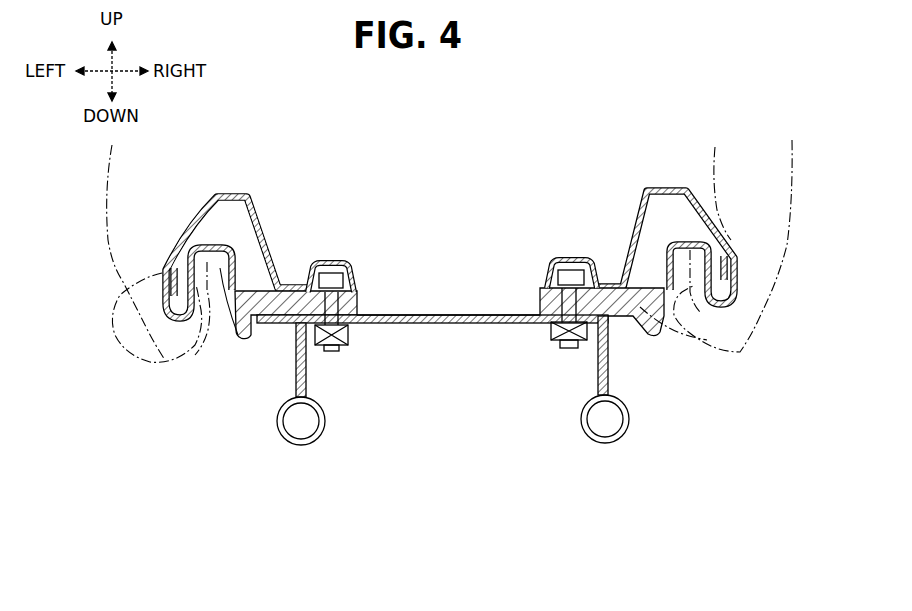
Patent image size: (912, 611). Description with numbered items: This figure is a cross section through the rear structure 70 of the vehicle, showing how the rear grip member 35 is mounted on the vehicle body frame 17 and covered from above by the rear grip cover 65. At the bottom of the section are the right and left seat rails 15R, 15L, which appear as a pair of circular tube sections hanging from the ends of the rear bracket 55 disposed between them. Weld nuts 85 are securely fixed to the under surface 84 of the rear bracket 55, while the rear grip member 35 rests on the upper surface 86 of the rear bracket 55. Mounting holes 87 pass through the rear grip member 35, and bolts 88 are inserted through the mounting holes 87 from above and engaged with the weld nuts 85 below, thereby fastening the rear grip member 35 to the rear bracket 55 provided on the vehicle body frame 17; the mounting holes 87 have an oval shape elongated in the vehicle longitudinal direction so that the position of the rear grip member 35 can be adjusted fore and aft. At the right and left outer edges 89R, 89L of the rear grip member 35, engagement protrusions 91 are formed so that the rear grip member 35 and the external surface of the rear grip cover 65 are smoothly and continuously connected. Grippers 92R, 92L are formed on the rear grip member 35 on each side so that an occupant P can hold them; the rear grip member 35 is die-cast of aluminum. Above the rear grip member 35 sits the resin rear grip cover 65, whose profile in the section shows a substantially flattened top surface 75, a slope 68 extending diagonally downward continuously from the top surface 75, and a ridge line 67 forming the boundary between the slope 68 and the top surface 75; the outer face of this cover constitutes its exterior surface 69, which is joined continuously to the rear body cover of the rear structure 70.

The rear structure 70 is at (532, 152).
The ridge line 67 is at (210, 212).
The slope 68 is at (188, 223).
The exterior surface 69 is at (226, 190).
The top surface 75 is at (245, 192).
The rear grip cover 65 is at (661, 183).
The engagement protrusions 91 is at (163, 273).
The under surface 84 is at (440, 325).
The rear grip member 35 is at (632, 318).
The rear bracket 55 is at (437, 311).
The upper surface 86 is at (478, 313).
The bolts 88 is at (330, 262).
The mounting holes 87 is at (344, 306).
The weld nuts 85 is at (345, 338).
The vehicle body frame 17 is at (342, 462).
The left seat rail 15L is at (277, 426).
The right seat rail 15R is at (629, 419).
The occupant P is at (107, 213).
The left outer edge 89L is at (165, 285).
The right outer edge 89R is at (737, 302).
The left gripper 92L is at (235, 322).
The right gripper 92R is at (688, 305).